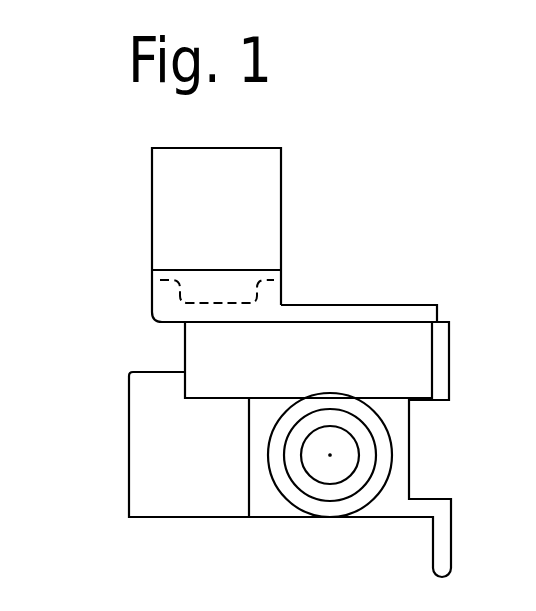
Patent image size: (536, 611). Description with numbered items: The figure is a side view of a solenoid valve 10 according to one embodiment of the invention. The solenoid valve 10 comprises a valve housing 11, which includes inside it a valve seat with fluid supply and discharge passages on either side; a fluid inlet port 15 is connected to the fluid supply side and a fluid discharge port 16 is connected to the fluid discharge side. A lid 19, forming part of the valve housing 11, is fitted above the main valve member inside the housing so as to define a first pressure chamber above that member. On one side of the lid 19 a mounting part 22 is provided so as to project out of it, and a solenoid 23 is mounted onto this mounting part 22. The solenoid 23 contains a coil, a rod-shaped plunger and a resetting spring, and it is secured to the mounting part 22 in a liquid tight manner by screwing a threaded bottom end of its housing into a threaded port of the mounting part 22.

The solenoid valve 10 is at (122, 372).
The valve housing 11 is at (253, 520).
The fluid inlet port 15 is at (355, 457).
The fluid discharge port 16 is at (128, 472).
The lid 19 is at (377, 310).
The mounting part 22 is at (283, 283).
The solenoid 23 is at (282, 183).